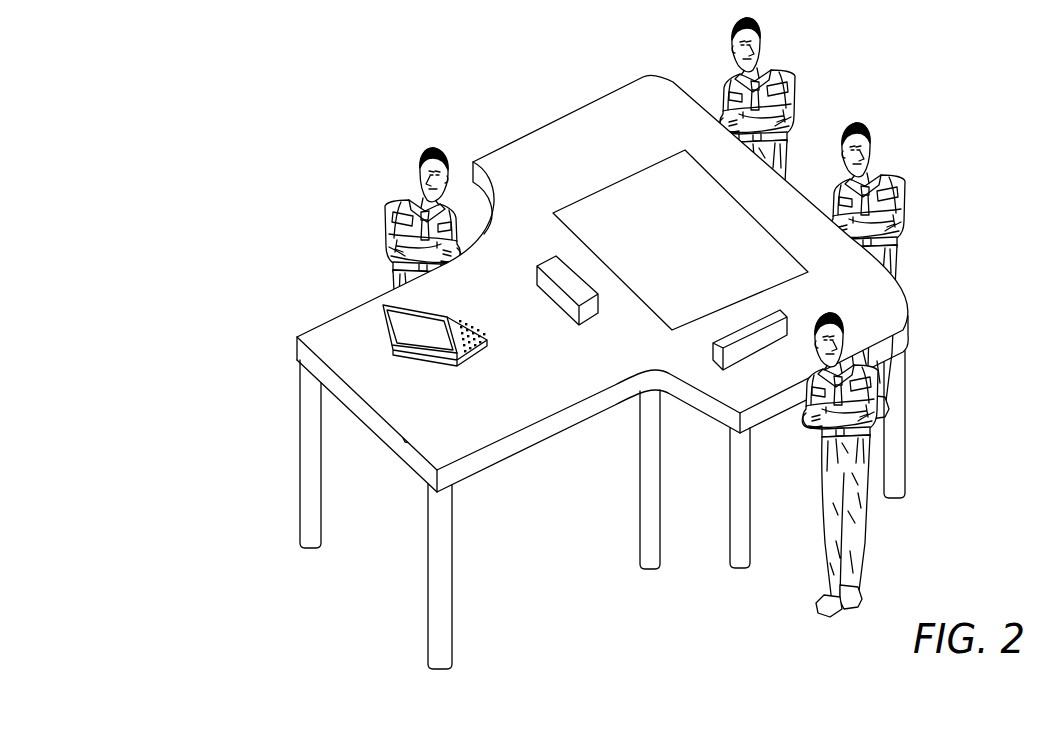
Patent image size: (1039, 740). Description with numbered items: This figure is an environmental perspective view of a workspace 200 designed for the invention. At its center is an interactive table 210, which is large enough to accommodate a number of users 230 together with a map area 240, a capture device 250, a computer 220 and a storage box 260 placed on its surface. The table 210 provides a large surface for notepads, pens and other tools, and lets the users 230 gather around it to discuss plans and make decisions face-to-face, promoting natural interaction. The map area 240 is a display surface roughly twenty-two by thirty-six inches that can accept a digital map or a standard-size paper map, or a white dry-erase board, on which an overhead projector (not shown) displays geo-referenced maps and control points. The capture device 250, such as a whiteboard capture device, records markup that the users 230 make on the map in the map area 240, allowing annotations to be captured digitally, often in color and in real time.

The workspace 200 is at (266, 168).
The interactive table 210 is at (337, 318).
The computer 220 is at (398, 328).
The users 230 is at (418, 157).
The map area 240 is at (588, 196).
The capture device 250 is at (788, 310).
The storage box 260 is at (552, 302).